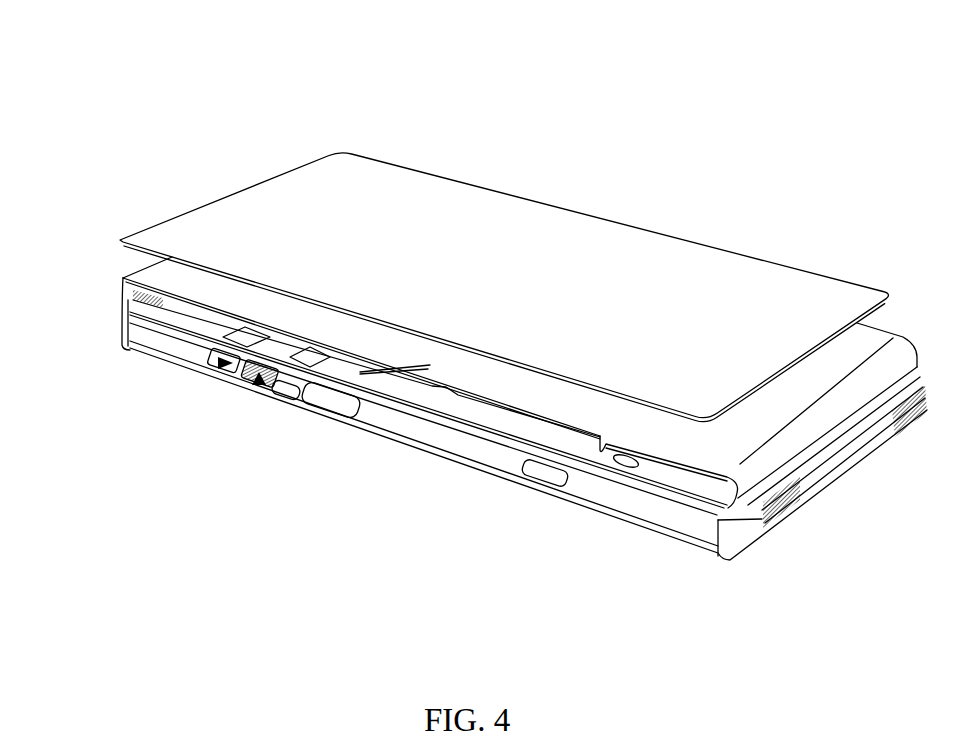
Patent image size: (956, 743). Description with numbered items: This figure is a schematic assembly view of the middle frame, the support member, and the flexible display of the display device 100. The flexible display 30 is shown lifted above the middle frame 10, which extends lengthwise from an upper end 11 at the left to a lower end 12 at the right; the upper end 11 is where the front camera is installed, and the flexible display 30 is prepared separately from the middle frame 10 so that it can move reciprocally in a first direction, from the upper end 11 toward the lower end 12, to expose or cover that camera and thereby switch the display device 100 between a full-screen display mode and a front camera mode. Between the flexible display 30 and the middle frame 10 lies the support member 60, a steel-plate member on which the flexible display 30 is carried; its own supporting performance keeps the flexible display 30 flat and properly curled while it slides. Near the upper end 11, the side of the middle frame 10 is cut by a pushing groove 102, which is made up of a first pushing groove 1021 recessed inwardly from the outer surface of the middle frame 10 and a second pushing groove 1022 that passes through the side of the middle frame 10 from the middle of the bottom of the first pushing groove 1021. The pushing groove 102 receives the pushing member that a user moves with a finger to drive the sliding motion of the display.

The display device 100 is at (523, 64).
The flexible display 30 is at (292, 183).
The upper end 11 is at (128, 299).
The middle frame 10 is at (617, 486).
The lower end 12 is at (827, 477).
The pushing groove 102 is at (182, 437).
The first pushing groove 1021 is at (216, 363).
The second pushing groove 1022 is at (257, 385).
The support member 60 is at (420, 367).